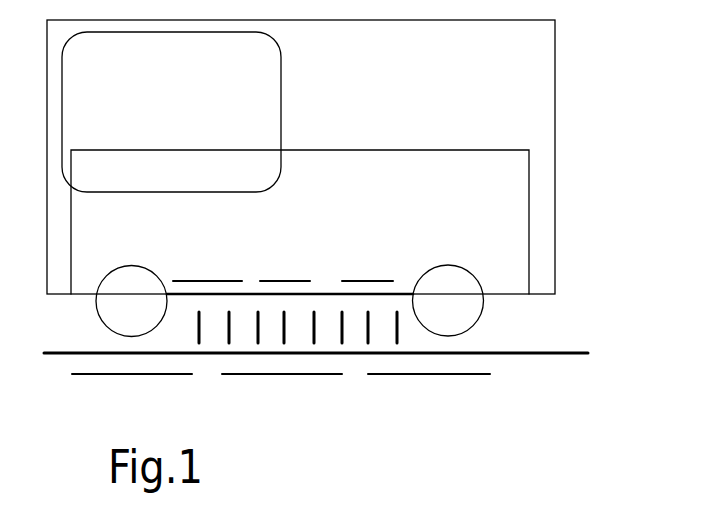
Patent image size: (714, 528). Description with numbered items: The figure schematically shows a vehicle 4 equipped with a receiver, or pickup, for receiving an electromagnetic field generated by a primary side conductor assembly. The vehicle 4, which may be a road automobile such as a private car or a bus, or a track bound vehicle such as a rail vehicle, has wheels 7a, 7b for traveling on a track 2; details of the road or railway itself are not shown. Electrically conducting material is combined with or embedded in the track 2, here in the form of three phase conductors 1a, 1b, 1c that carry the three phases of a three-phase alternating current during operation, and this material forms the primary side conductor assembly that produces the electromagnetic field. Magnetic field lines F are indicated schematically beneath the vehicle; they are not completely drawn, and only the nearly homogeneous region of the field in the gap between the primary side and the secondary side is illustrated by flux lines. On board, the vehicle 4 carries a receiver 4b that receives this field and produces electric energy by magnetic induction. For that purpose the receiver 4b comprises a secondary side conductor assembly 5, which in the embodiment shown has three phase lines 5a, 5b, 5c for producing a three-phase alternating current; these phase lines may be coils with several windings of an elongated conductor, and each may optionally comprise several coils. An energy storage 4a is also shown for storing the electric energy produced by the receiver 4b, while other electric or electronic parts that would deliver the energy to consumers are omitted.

The phase conductor 1a is at (470, 375).
The phase conductor 1b is at (287, 375).
The phase conductor 1c is at (152, 375).
The track 2 is at (582, 350).
The vehicle 4 is at (557, 88).
The energy storage 4a is at (280, 87).
The receiver 4b is at (420, 147).
The secondary side conductor assembly 5 is at (379, 230).
The phase line 5a is at (402, 263).
The phase line 5b is at (277, 280).
The phase line 5c is at (192, 280).
The wheel 7a is at (485, 308).
The wheel 7b is at (97, 315).
The magnetic field lines F is at (343, 335).